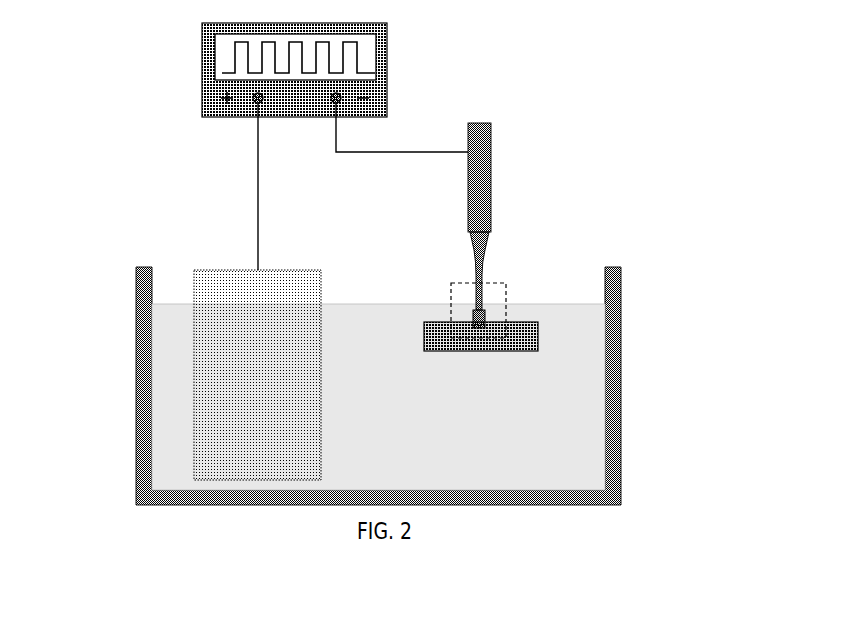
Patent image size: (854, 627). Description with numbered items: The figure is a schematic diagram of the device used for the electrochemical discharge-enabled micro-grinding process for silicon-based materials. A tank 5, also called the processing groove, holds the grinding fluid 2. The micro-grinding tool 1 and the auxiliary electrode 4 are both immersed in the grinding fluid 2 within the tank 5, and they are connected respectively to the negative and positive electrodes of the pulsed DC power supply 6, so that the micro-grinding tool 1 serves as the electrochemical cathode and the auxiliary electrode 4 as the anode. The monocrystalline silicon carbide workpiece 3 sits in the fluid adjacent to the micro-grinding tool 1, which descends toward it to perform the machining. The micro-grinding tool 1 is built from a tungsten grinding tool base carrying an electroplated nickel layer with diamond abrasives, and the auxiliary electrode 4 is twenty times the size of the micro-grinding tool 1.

The micro-grinding tool 1 is at (605, 220).
The grinding fluid 2 is at (585, 318).
The workpiece 3 is at (583, 364).
The auxiliary electrode 4 is at (173, 375).
The tank 5 is at (323, 371).
The pulsed DC power supply 6 is at (206, 88).